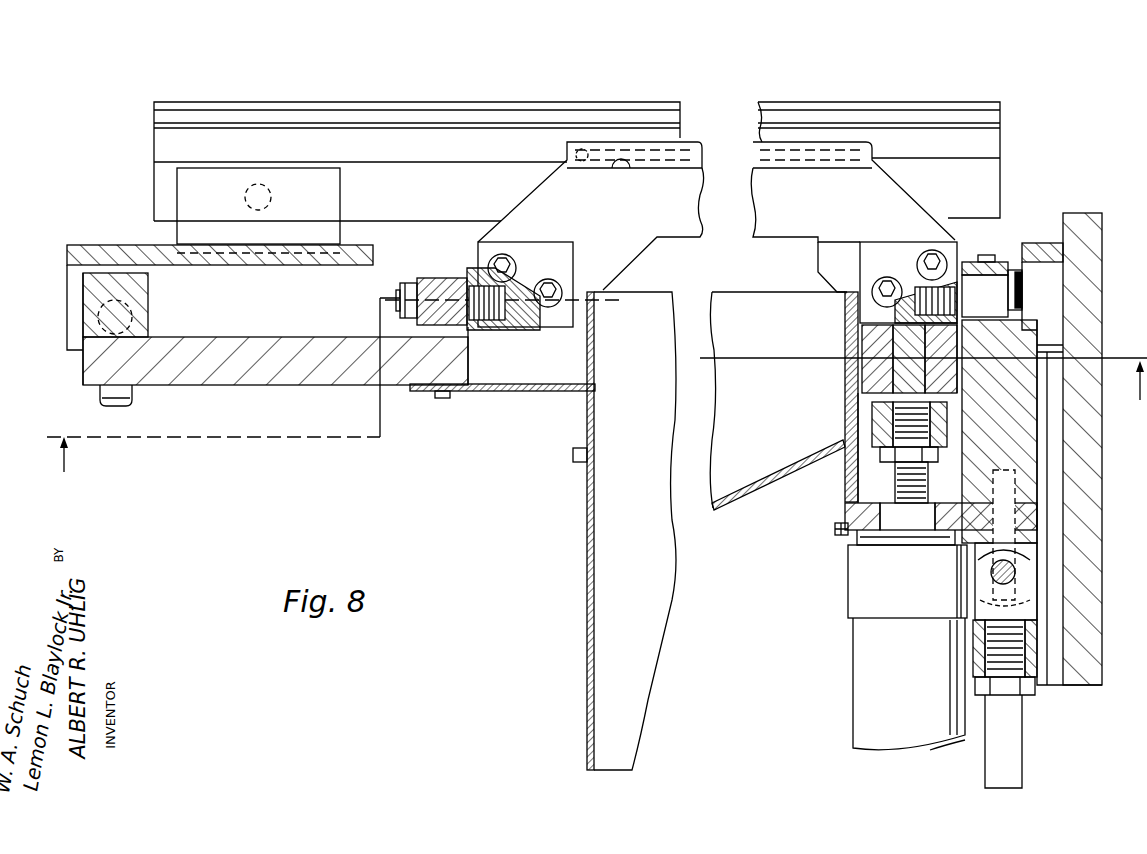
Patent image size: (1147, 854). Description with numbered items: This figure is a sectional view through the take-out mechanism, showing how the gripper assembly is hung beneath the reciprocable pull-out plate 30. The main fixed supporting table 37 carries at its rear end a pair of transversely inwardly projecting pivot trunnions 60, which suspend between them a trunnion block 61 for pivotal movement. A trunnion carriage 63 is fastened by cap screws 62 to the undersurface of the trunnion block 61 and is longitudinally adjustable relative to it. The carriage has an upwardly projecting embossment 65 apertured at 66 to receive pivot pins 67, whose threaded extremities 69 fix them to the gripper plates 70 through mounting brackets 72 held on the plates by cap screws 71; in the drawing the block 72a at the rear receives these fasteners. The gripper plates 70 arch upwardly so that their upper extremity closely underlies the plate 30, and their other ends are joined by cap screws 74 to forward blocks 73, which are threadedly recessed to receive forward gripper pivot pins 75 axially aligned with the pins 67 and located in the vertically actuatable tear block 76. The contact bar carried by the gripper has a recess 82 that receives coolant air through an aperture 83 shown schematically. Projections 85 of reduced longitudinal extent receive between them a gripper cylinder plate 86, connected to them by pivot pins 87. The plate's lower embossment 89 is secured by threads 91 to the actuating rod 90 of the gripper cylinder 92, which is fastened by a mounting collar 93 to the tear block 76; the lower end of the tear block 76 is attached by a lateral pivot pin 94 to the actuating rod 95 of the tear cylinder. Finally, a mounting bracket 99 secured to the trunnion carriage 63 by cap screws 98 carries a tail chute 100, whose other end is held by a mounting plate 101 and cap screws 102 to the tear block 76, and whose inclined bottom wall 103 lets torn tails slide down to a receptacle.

The longitudinally reciprocable plate 30 is at (326, 98).
The supporting base plate 37 is at (95, 252).
The pivot trunnions 60 is at (100, 322).
The trunnion block 61 is at (148, 290).
The cap screws 62 is at (132, 402).
The trunnion carriage 63 is at (260, 342).
The embossment 65 is at (425, 282).
The aperture 66 is at (447, 278).
The pivot pins 67 is at (470, 328).
The threaded extremities 69 is at (505, 326).
The gripper plates 70 is at (664, 243).
The cap screws 71 is at (516, 266).
The mounting brackets 72 is at (785, 238).
The block 72a is at (573, 258).
The forward blocks 73 is at (948, 262).
The cap screws 74 is at (877, 282).
The forward gripper pivot pins 75 is at (996, 307).
The tear block 76 is at (1008, 418).
The recess 82 is at (607, 166).
The aperture 83 is at (568, 153).
The projections 85 is at (950, 355).
The gripper cylinder plate 86 is at (866, 398).
The pivot pins 87 is at (885, 350).
The lower embossment 89 is at (863, 445).
The actuating rod 90 is at (920, 498).
The threads 91 is at (870, 418).
The gripper cylinder 92 is at (900, 672).
The mounting collar 93 is at (858, 546).
The lateral pivot pin 94 is at (1000, 586).
The actuating rod 95 is at (1012, 746).
The cap screws 98 is at (440, 398).
The mounting bracket 99 is at (505, 392).
The tail chute 100 is at (603, 506).
The mounting plate 101 is at (845, 490).
The cap screws 102 is at (833, 535).
The inclined bottom wall 103 is at (748, 492).